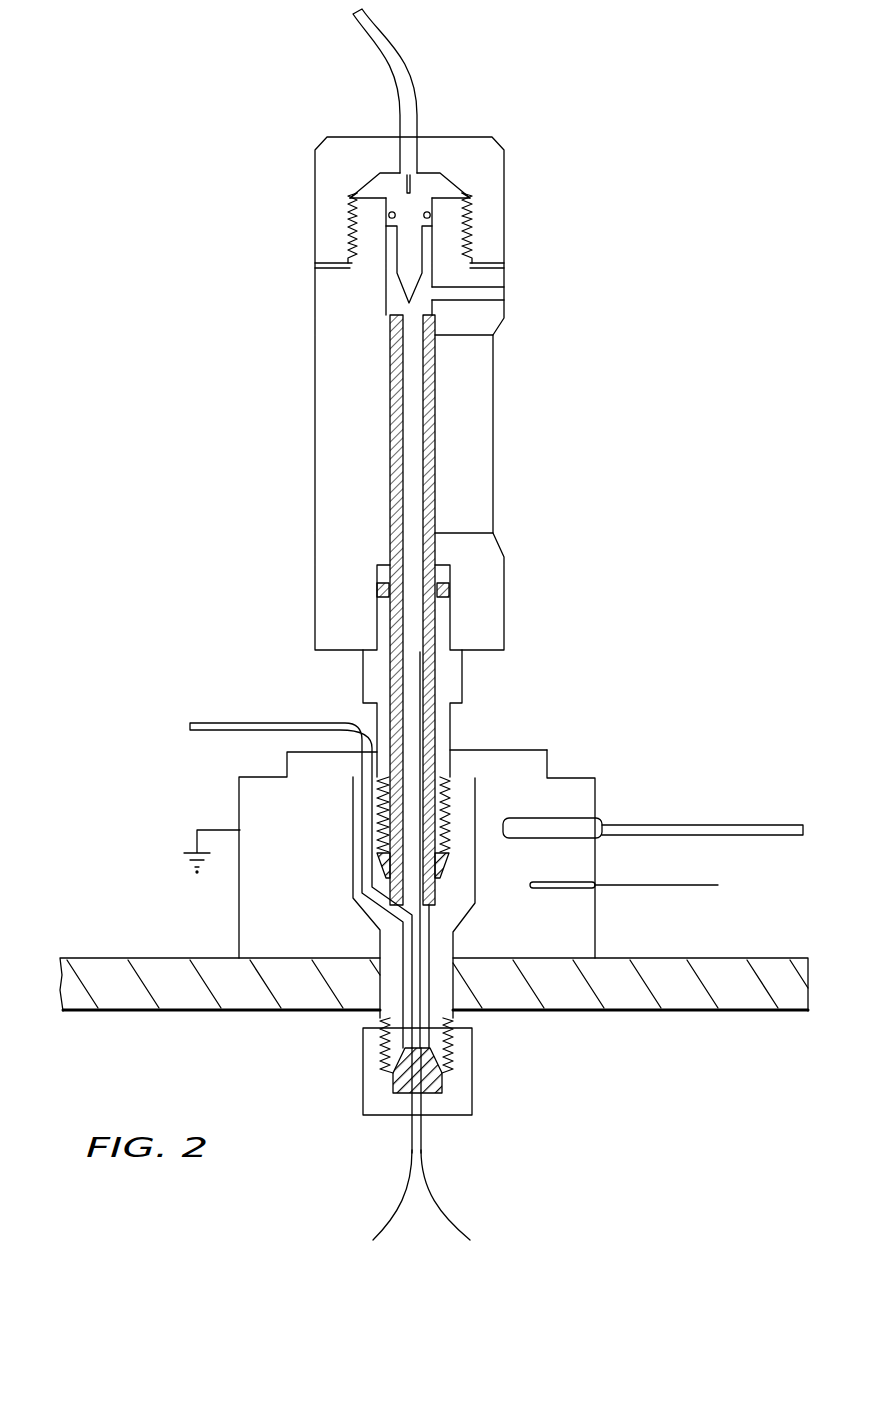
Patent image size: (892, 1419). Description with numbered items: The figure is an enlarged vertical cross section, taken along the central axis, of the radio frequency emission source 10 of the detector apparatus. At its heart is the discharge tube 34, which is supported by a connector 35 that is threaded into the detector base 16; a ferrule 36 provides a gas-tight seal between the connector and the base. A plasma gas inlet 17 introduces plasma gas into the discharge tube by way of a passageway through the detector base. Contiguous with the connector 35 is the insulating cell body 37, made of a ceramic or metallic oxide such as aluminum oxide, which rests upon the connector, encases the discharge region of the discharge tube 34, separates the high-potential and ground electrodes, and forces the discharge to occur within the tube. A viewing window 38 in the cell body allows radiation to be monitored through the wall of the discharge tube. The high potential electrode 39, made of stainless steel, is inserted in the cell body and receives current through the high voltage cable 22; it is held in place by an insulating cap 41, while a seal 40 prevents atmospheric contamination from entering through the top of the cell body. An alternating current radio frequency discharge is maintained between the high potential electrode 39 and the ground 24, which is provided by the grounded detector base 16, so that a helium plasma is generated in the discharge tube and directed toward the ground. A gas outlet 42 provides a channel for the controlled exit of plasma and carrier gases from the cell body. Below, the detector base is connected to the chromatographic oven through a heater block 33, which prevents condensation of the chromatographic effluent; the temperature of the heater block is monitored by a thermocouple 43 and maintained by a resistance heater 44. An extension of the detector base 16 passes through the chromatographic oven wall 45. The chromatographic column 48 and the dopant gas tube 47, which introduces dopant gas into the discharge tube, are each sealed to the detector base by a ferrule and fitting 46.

The radio frequency emission source 10 is at (300, 452).
The detector base 16 is at (530, 765).
The plasma gas inlet 17 is at (243, 725).
The high voltage cable 22 is at (400, 60).
The ground 24 is at (196, 845).
The heater block 33 is at (576, 797).
The discharge tube 34 is at (432, 408).
The connector 35 is at (443, 738).
The ferrule 36 is at (385, 862).
The insulating cell body 37 is at (330, 497).
The viewing window 38 is at (478, 450).
The high potential electrode 39 is at (437, 186).
The seal 40 is at (430, 215).
The insulating cap 41 is at (330, 190).
The gas outlet 42 is at (500, 292).
The thermocouple 43 is at (573, 888).
The resistance heater 44 is at (570, 832).
The chromatographic oven wall 45 is at (635, 1000).
The ferrule and fitting 46 is at (443, 1090).
The dopant gas tube 47 is at (385, 1217).
The chromatographic column 48 is at (452, 1220).